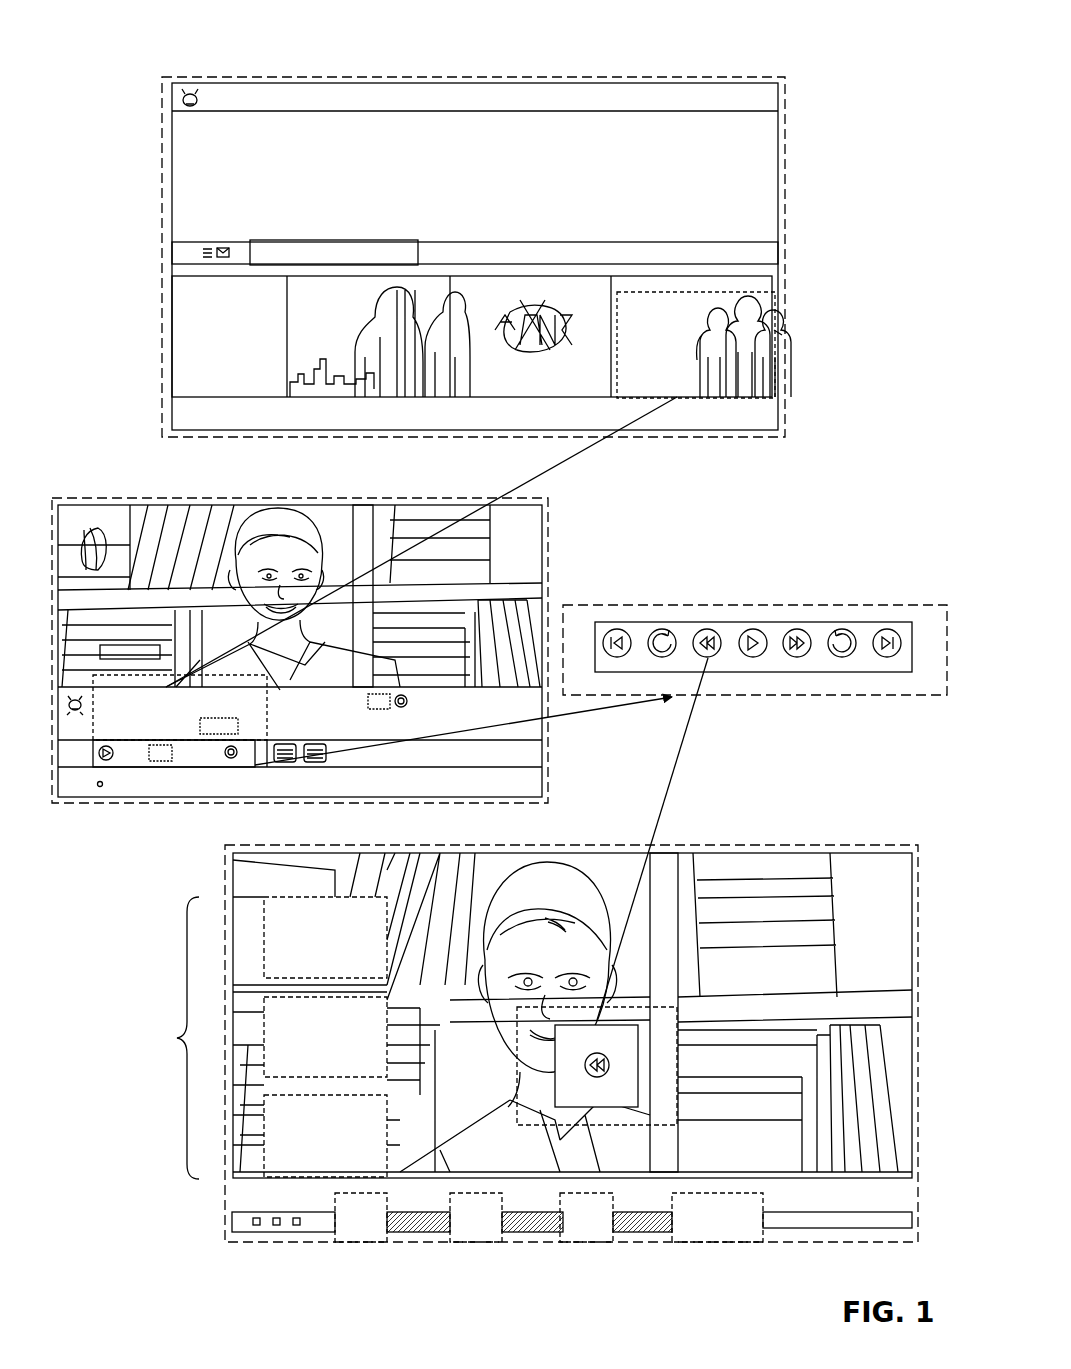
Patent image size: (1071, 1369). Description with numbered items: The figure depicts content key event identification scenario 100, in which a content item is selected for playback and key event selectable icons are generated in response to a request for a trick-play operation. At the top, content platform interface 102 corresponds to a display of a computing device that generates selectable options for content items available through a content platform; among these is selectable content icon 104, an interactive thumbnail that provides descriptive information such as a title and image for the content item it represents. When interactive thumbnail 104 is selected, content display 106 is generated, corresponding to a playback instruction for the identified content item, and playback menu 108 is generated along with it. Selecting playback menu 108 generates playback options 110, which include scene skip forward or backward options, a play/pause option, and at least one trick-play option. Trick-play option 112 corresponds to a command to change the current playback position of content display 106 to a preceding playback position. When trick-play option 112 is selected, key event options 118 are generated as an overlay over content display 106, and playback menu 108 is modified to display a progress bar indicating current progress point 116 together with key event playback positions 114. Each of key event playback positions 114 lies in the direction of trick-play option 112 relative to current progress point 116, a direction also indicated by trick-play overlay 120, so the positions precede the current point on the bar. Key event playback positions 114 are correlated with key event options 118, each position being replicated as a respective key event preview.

The content key event identification scenario 100 is at (120, 30).
The content platform interface 102 is at (787, 239).
The selectable content icon 104 is at (760, 360).
The content display 106 is at (116, 526).
The playback menu 108 is at (96, 770).
The playback options 110 is at (717, 605).
The trick-play option 112 is at (720, 646).
The key event playback positions 114 is at (358, 1243).
The current progress point 116 is at (712, 1243).
The key event options 118 is at (178, 1040).
The trick-play overlay 120 is at (677, 1075).